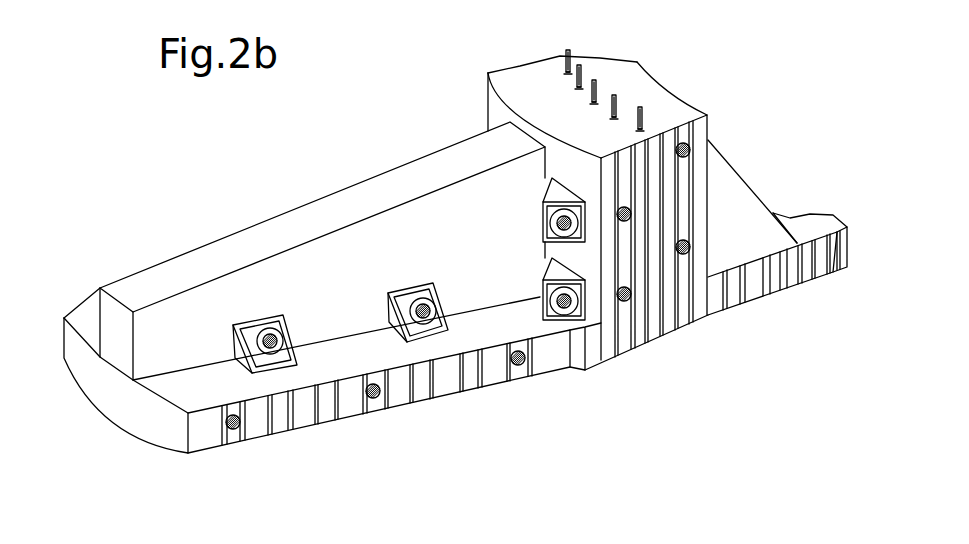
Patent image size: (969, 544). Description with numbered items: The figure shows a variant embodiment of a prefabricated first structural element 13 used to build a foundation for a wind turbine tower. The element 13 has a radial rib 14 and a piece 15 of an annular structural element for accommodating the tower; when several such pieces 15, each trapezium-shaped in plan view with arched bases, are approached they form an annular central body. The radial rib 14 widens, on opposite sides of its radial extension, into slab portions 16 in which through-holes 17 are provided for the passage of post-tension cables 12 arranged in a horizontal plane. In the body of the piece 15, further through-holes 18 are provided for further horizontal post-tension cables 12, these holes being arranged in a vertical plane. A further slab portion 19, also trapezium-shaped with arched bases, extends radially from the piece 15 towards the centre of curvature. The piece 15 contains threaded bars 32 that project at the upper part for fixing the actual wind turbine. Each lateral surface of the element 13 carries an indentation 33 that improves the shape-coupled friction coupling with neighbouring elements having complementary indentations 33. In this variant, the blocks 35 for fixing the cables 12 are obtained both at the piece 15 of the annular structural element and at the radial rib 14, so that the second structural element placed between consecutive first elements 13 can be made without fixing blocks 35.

The post-tension cables 12 is at (403, 313).
The first structural element 13 is at (444, 138).
The radial ribs 14 is at (282, 290).
The piece of annular structural element 15 is at (528, 93).
The slab portions 16 is at (86, 327).
The through-holes 17 is at (233, 432).
The further through-holes 18 is at (628, 206).
The further slab portions 19 is at (783, 228).
The threaded bars 32 is at (640, 107).
The indentation 33 is at (492, 368).
The fixing blocks 35 is at (242, 320).